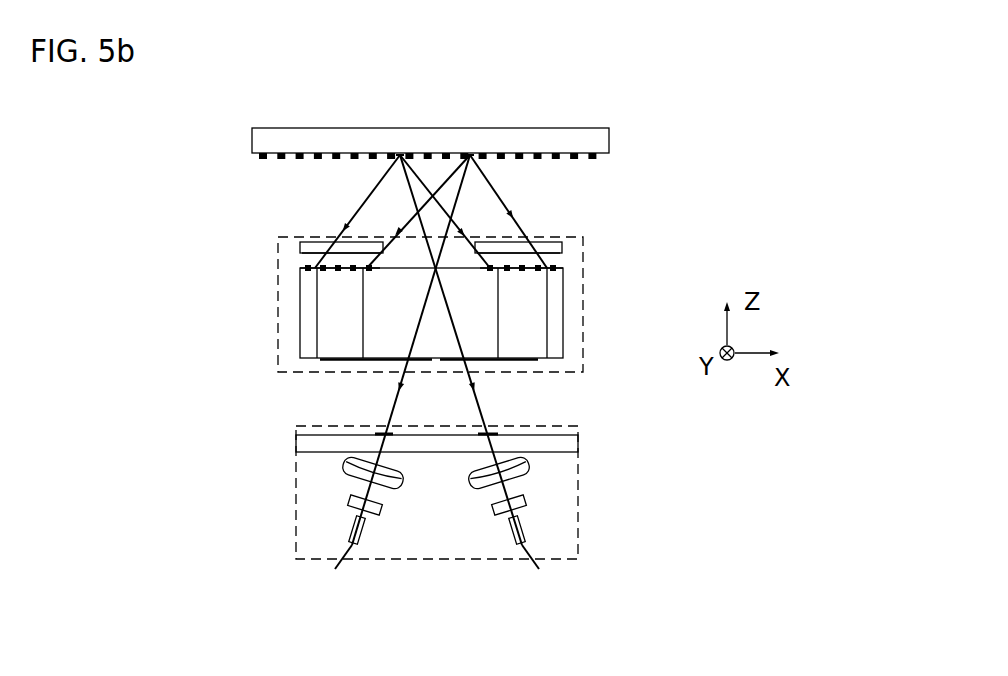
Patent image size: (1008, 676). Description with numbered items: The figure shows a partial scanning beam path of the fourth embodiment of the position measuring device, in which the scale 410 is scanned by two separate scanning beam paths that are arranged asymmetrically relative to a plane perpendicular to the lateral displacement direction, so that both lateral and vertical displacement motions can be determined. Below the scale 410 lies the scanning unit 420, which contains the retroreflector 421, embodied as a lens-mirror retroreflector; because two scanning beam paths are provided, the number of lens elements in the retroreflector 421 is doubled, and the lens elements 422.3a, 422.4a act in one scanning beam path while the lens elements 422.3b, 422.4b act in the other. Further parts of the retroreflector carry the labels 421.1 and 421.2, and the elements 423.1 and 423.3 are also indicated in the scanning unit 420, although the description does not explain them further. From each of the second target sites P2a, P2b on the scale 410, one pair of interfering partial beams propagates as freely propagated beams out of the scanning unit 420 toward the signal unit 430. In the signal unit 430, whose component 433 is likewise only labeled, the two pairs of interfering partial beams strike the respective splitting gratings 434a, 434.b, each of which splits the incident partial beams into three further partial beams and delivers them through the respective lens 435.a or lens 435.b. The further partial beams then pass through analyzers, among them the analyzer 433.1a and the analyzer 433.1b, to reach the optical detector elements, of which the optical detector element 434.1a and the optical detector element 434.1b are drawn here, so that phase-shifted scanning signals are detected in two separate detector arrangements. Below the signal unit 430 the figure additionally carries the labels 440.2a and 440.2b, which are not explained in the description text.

The scale 410 is at (626, 139).
The second target site P2a is at (400, 155).
The second target site P2b is at (470, 155).
The scanning unit 420 is at (601, 278).
The retroreflector 421 is at (310, 325).
The scanning plate lower surface part 421.1 is at (322, 359).
The scanning plate lower surface part 421.2 is at (537, 358).
The lens element 422.3a is at (304, 268).
The lens element 422.3b is at (300, 245).
The lens element 422.4a is at (542, 241).
The lens element 422.4b is at (558, 267).
The optical element 423.1 is at (362, 248).
The optical element 423.3 is at (506, 258).
The signal unit 430 is at (599, 540).
The carrier plate 433 is at (307, 448).
The analyzer 433.1a is at (350, 501).
The analyzer 433.1b is at (527, 500).
The splitting grating 434a is at (377, 432).
The splitting grating 434.b is at (495, 432).
The optical detector element 434.1a is at (350, 532).
The optical detector element 434.1b is at (527, 540).
The lens 435.a is at (345, 465).
The lens 435.b is at (533, 462).
The beam path 440.2a is at (320, 572).
The beam path 440.2b is at (554, 572).